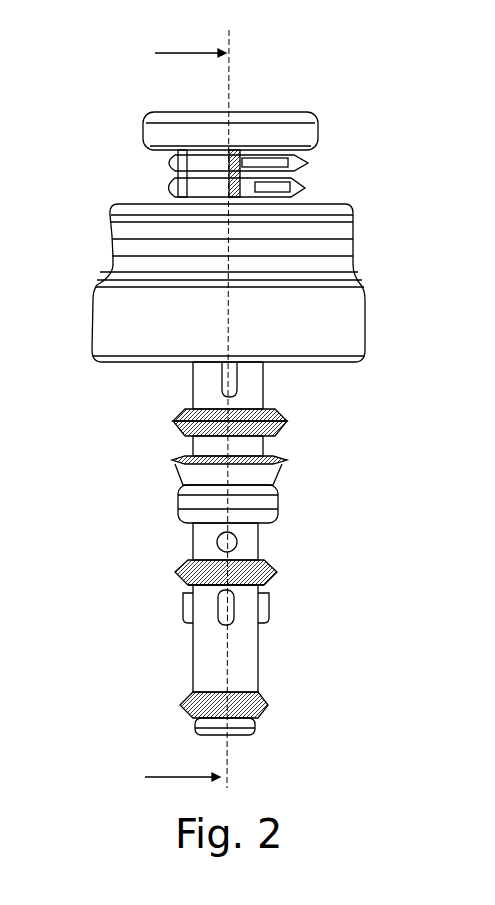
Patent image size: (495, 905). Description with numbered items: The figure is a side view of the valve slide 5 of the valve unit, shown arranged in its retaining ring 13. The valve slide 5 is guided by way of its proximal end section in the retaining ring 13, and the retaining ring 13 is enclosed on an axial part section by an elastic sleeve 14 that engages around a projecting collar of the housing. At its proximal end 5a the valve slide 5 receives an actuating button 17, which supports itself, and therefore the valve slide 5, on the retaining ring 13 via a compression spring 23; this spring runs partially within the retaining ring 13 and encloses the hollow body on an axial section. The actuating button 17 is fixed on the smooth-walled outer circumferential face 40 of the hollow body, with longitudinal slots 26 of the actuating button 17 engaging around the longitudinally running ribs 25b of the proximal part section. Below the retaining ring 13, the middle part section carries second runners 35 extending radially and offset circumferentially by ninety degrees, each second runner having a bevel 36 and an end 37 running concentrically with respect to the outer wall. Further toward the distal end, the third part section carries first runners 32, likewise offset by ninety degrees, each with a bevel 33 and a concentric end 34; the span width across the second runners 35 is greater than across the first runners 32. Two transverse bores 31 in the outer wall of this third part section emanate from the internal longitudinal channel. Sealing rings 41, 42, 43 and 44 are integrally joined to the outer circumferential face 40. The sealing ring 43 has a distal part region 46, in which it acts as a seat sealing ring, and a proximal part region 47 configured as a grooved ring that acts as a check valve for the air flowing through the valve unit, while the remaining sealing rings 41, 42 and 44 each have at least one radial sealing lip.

The valve slide 5 is at (268, 541).
The proximal end 5a is at (165, 194).
The retaining ring 13 is at (345, 267).
The elastic sleeve 14 is at (358, 316).
The actuating button 17 is at (263, 128).
The compression spring 23 is at (163, 166).
The longitudinally running ribs 25b is at (300, 148).
The longitudinal slots 26 is at (300, 178).
The transverse bores 31 is at (192, 548).
The first runners 32 is at (218, 615).
The bevel 33 is at (261, 622).
The end 34 is at (183, 605).
The second runners 35 is at (182, 416).
The bevel 36 is at (172, 432).
The end 37 is at (165, 365).
The outer circumferential face 40 is at (177, 578).
The sealing ring 41 is at (266, 706).
The sealing ring 42 is at (279, 573).
The sealing ring 43 is at (278, 494).
The sealing ring 44 is at (172, 460).
The distal part region 46 is at (216, 542).
The proximal part region 47 is at (172, 470).